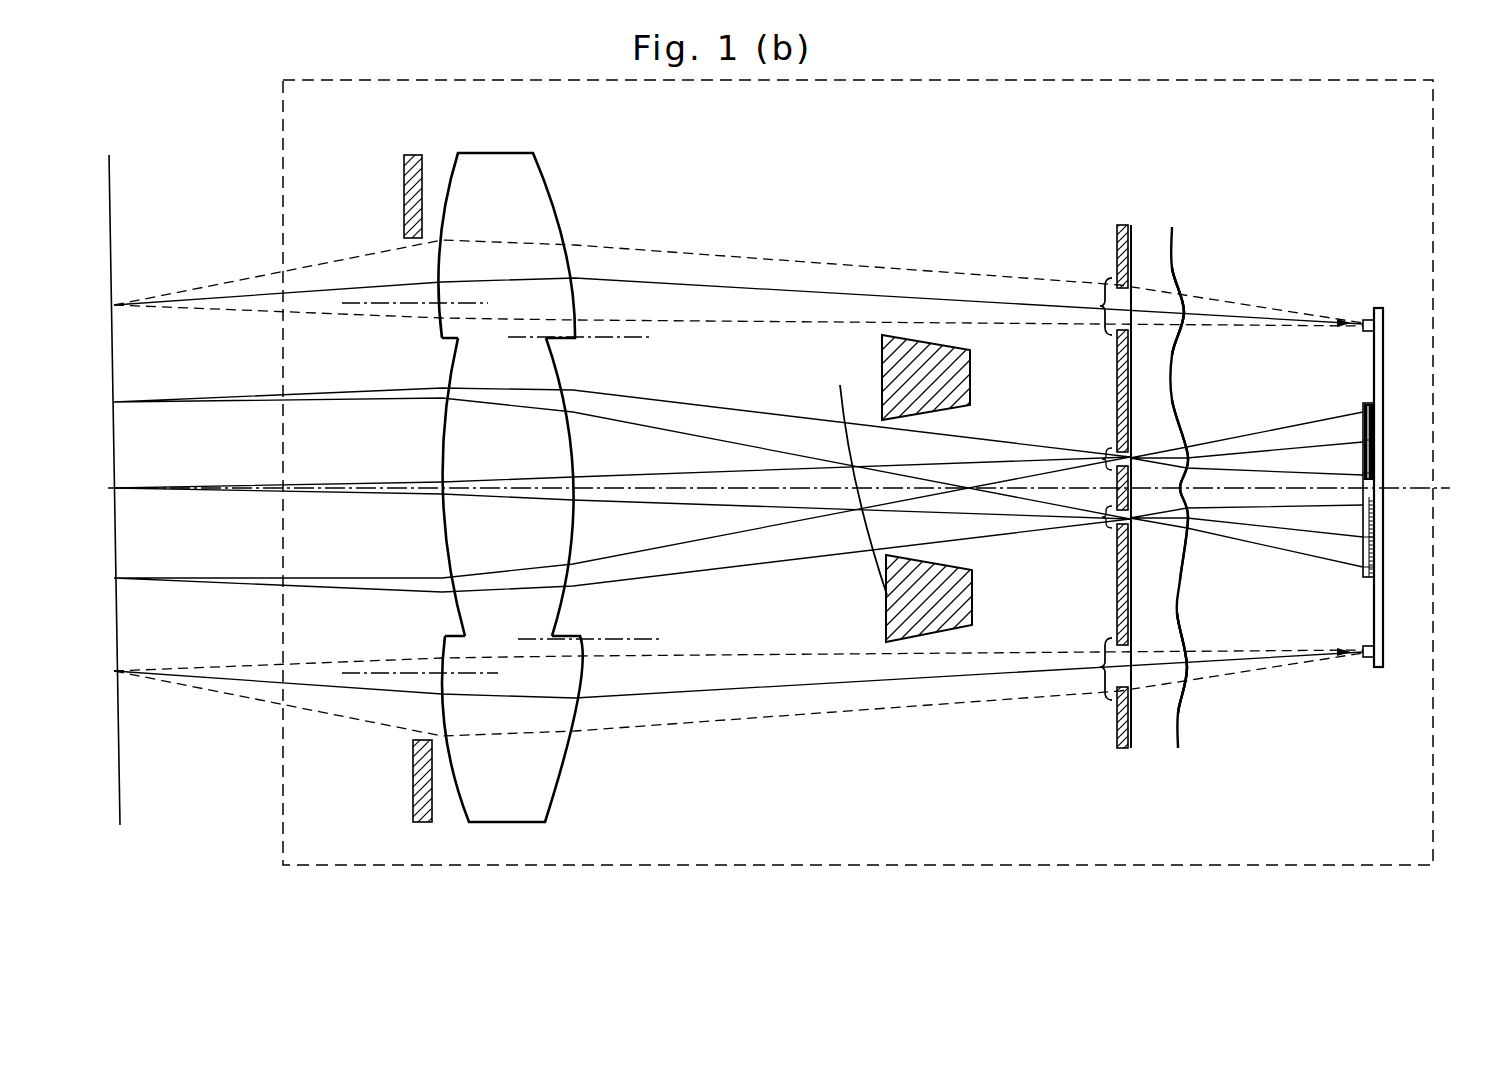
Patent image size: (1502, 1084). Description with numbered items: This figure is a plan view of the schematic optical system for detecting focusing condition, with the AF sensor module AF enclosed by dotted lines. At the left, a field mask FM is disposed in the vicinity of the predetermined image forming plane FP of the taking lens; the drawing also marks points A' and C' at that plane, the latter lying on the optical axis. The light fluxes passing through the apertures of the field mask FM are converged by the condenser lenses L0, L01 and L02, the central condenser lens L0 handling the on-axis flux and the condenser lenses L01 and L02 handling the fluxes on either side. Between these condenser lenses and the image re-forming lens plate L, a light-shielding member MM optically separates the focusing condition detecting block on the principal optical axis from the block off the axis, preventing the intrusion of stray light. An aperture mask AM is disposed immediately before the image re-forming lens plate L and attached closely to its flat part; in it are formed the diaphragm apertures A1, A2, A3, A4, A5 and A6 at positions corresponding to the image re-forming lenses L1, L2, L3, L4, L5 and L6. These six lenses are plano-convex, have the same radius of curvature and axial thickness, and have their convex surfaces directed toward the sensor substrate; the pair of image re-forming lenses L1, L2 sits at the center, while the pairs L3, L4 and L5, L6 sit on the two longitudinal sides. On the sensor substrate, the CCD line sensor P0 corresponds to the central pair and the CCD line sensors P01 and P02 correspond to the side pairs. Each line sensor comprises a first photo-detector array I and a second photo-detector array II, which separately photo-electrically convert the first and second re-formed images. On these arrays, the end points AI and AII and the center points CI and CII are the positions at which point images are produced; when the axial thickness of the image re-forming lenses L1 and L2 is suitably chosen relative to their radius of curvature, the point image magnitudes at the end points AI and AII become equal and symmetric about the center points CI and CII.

The AF sensor module AF is at (958, 82).
The predetermined image forming plane FP is at (113, 172).
The field mask FM is at (404, 176).
The condenser lens L01 is at (545, 180).
The condenser lens L0 is at (565, 382).
The condenser lens L02 is at (560, 775).
The object point A' is at (622, 441).
The object point C' on optical axis C' is at (622, 483).
The light-shielding member MM is at (882, 383).
The aperture mask AM is at (1117, 242).
The diaphragm aperture A3 is at (1104, 300).
The diaphragm aperture A4 is at (1104, 300).
The diaphragm aperture A2 is at (1105, 455).
The diaphragm aperture A1 is at (1105, 522).
The diaphragm aperture A5 is at (1104, 662).
The diaphragm aperture A6 is at (1104, 662).
The image re-forming lens plate L is at (1153, 242).
The image re-forming lens L3 is at (1183, 288).
The image re-forming lens L4 is at (1183, 288).
The image re-forming lens L2 is at (1184, 432).
The image re-forming lens L1 is at (1187, 555).
The image re-forming lens L5 is at (1187, 690).
The image re-forming lens L6 is at (1187, 690).
The CCD line sensor P01 is at (1363, 320).
The CCD line sensor P0 is at (1357, 469).
The CCD line sensor P02 is at (1366, 660).
The photo-detector array II is at (1378, 422).
The photo-detector array I is at (1378, 522).
The center point CII is at (1363, 445).
The end point AII is at (1363, 473).
The center point CI is at (1363, 537).
The end point AI is at (1363, 567).